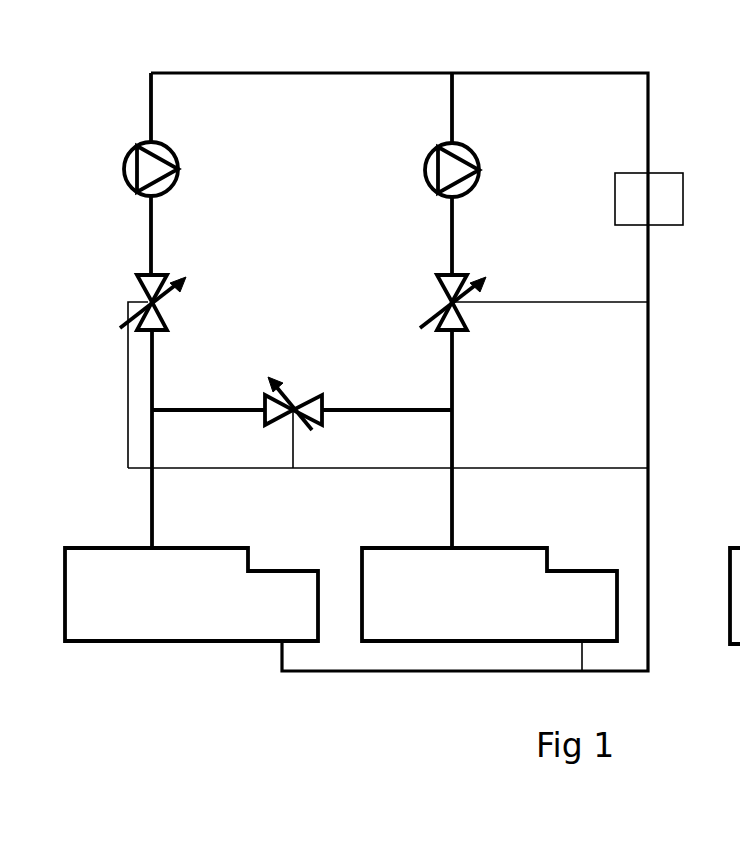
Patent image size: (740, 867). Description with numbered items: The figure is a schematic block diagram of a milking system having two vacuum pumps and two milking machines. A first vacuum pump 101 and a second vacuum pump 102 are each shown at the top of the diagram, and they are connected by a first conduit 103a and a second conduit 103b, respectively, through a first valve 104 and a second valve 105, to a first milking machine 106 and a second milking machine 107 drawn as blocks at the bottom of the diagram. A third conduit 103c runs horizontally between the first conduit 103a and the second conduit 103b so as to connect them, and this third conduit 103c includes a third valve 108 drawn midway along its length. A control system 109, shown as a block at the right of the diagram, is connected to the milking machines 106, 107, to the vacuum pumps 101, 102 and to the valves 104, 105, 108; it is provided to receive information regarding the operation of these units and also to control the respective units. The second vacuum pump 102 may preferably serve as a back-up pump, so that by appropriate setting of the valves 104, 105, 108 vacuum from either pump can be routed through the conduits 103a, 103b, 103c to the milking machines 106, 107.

The first vacuum pump 101 is at (123, 165).
The second vacuum pump 102 is at (479, 175).
The first conduit 103a is at (152, 238).
The second conduit 103b is at (453, 230).
The third conduit 103c is at (357, 408).
The first valve 104 is at (148, 300).
The second valve 105 is at (460, 330).
The first milking machine 106 is at (192, 642).
The second milking machine 107 is at (492, 642).
The third valve 108 is at (297, 400).
The control system 109 is at (668, 172).